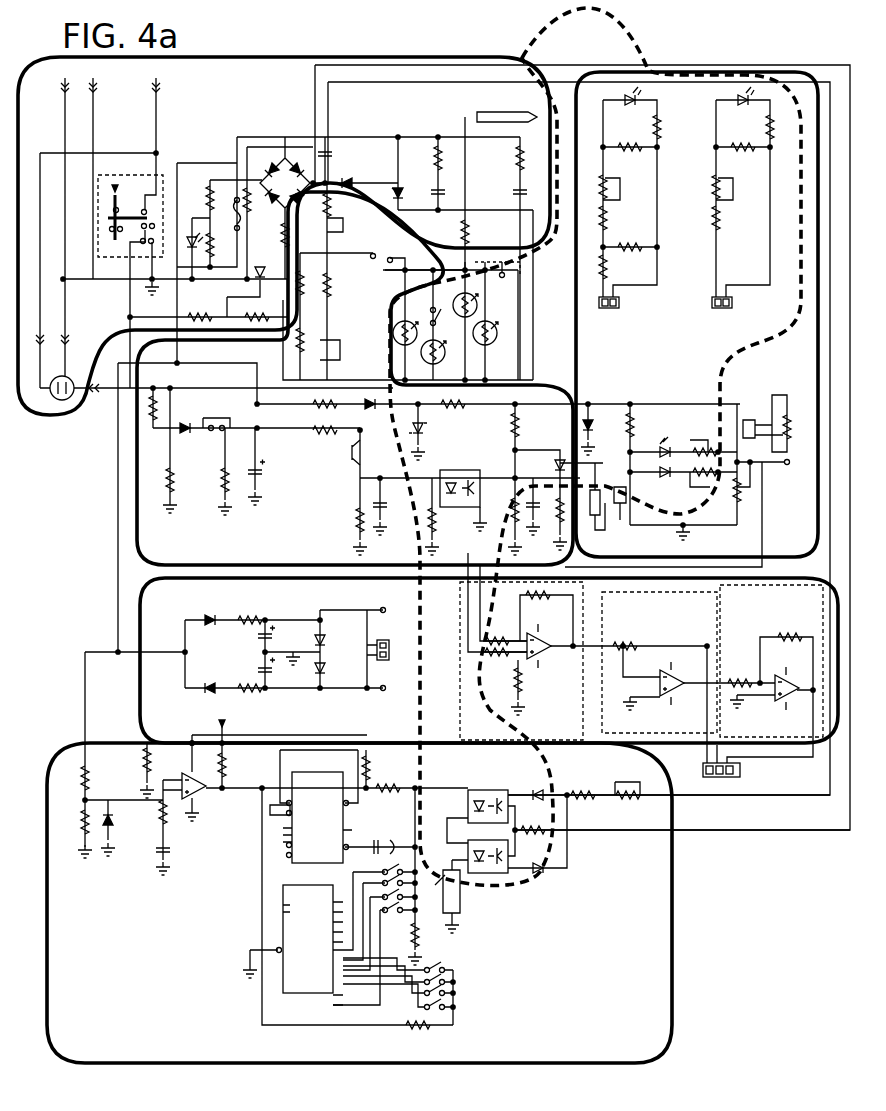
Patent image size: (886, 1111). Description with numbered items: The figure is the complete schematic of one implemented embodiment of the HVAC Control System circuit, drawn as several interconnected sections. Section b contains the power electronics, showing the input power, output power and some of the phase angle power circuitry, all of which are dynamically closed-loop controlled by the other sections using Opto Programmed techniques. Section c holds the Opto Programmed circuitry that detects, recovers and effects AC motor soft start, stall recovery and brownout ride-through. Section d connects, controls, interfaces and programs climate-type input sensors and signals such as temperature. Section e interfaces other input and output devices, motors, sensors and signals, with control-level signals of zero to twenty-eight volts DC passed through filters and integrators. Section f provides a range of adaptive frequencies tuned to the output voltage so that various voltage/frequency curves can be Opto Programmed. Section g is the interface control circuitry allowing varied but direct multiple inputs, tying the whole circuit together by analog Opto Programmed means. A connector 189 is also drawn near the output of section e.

The connector 189 is at (711, 772).
The section b is at (284, 236).
The section c is at (355, 378).
The section d is at (697, 314).
The section e is at (489, 660).
The section f is at (359, 903).
The section g is at (595, 447).